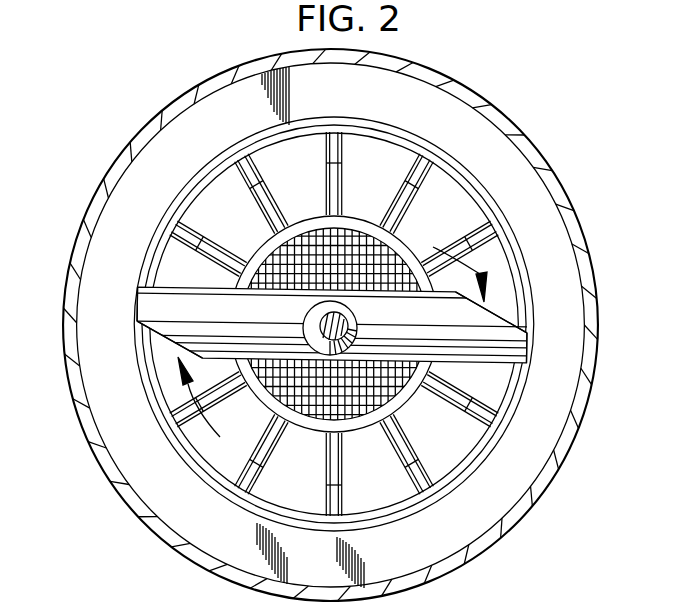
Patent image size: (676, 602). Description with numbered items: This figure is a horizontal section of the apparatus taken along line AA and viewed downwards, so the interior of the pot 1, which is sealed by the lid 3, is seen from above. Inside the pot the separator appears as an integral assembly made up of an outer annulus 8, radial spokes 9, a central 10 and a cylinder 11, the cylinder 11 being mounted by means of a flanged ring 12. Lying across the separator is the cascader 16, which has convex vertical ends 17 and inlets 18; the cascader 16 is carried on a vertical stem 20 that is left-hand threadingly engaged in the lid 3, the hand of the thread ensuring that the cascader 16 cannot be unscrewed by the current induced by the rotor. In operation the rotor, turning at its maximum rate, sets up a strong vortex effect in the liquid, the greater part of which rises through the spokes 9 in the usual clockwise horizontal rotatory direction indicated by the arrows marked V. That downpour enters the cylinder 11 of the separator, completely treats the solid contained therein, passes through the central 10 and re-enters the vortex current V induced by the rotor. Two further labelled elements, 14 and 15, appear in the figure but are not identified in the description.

The pot 1 is at (98, 238).
The lid 3 is at (113, 180).
The annulus 8 is at (153, 281).
The spokes 9 is at (466, 413).
The central 10 is at (358, 408).
The cylinder 11 is at (305, 228).
The flanged ring 12 is at (253, 240).
The spokes 14 is at (428, 476).
The screen mesh 15 is at (377, 393).
The cascader 16 is at (517, 350).
The convex vertical ends 17 is at (133, 308).
The inlets 18 is at (173, 348).
The vertical stem 20 is at (323, 327).
The vortex current V is at (173, 392).